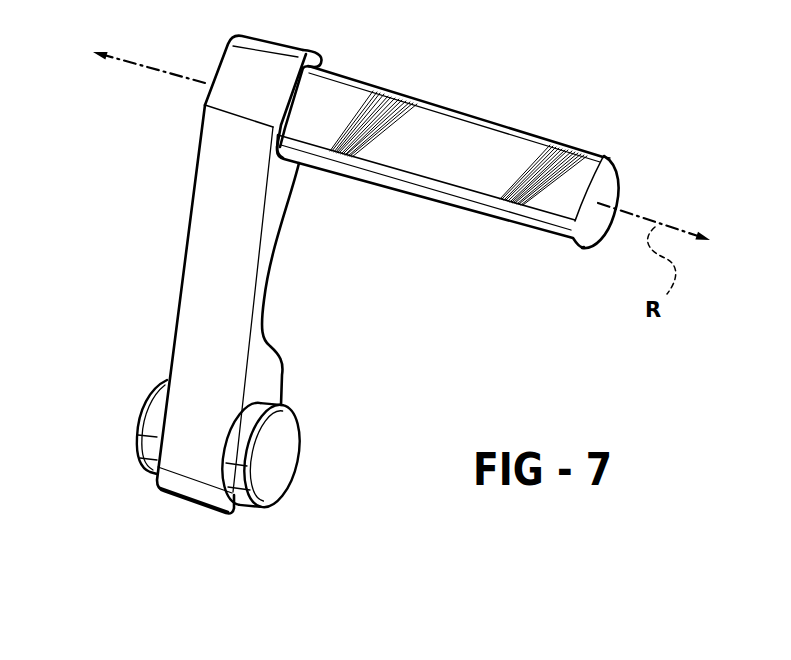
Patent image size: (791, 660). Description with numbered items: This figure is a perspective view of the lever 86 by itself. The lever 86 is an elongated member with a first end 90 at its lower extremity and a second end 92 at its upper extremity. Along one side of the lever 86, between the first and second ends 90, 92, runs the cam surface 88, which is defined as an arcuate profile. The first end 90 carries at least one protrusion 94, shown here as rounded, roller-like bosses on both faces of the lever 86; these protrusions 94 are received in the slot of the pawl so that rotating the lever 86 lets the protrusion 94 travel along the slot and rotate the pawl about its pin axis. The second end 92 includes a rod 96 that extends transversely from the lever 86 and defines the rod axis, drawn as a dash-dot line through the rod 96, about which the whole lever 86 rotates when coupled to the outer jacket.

The lever 86 is at (183, 256).
The cam surface 88 is at (270, 263).
The first end 90 is at (243, 512).
The second end 92 is at (318, 56).
The protrusion 94 is at (285, 457).
The rod 96 is at (518, 137).